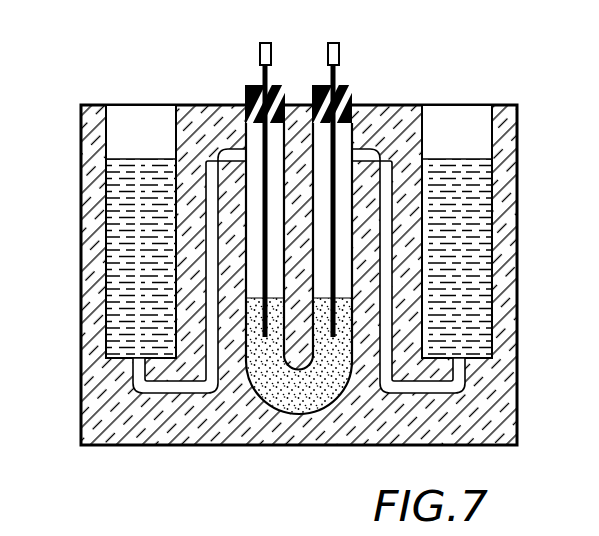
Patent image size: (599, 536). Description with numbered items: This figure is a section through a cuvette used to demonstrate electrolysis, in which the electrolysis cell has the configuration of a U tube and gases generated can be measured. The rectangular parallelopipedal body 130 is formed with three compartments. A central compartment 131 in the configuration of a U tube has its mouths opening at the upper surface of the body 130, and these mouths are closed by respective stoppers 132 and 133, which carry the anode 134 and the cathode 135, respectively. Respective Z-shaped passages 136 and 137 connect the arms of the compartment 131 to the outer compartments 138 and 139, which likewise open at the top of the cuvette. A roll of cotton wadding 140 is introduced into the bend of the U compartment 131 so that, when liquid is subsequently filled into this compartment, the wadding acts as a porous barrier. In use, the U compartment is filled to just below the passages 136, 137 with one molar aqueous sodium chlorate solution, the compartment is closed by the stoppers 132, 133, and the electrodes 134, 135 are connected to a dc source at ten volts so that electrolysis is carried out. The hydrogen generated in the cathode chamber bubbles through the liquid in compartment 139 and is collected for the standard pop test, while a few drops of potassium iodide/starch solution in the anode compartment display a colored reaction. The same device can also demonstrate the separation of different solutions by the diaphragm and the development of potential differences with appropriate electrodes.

The rectangular parallelopipedal body 130 is at (92, 410).
The compartment 131 is at (270, 408).
The stopper 132 is at (244, 88).
The stopper 133 is at (353, 92).
The anode 134 is at (271, 46).
The cathode 135 is at (339, 46).
The Z-shaped passage 136 is at (210, 156).
The Z-shaped passage 137 is at (387, 153).
The compartment 138 is at (107, 288).
The compartment 139 is at (492, 288).
The roll of cotton wadding 140 is at (327, 412).